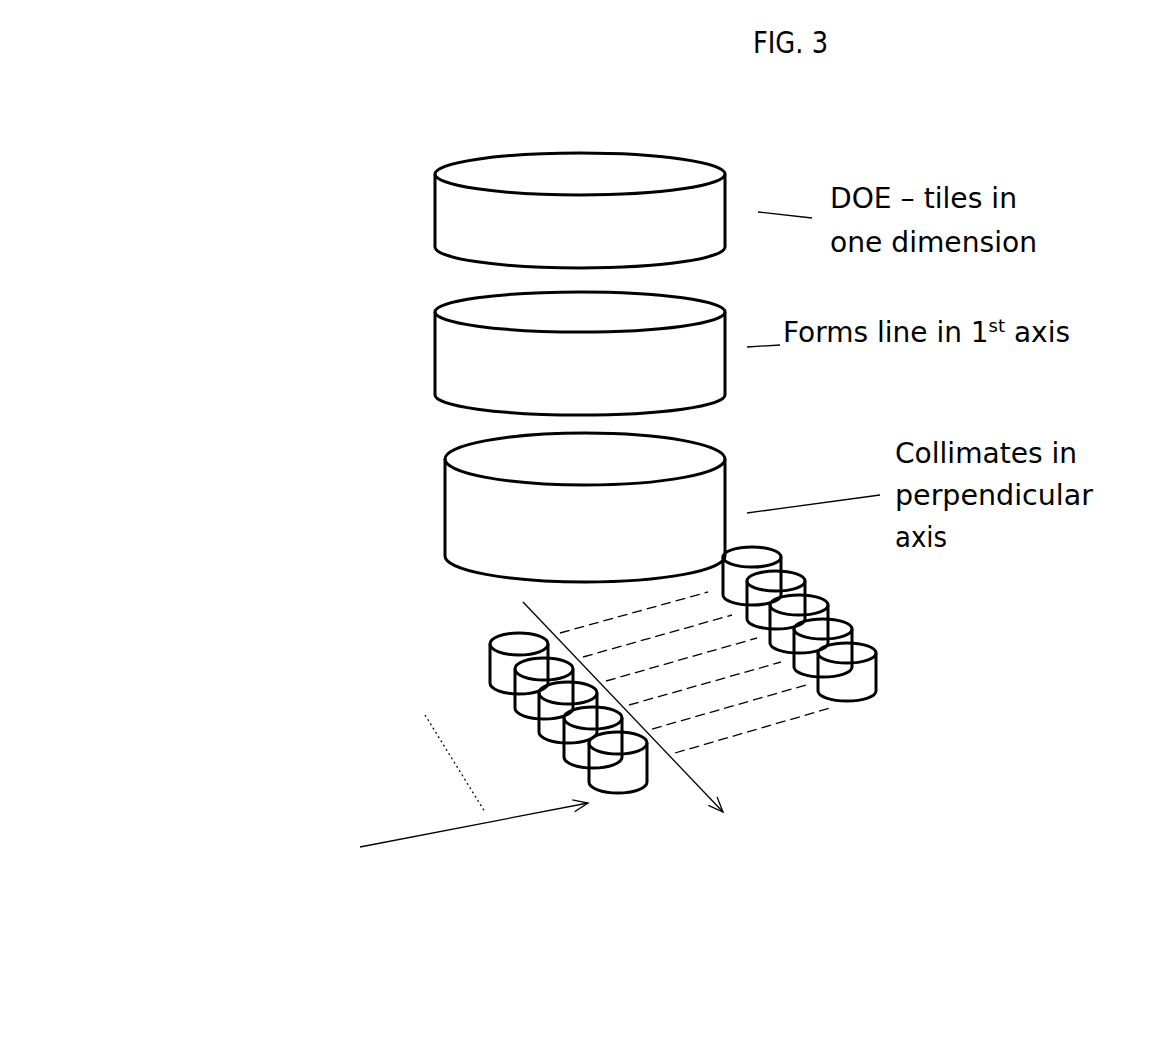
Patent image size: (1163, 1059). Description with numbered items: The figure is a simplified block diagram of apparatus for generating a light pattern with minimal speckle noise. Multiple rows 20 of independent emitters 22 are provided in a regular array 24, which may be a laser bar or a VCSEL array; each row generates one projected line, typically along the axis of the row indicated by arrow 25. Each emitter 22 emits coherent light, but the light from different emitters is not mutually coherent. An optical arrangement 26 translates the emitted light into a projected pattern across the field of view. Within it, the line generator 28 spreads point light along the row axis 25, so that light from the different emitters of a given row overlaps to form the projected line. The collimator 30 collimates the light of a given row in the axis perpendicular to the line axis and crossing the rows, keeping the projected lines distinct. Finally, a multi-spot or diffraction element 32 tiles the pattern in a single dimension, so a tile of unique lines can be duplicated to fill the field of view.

The rows of independent emitters 20 is at (487, 662).
The independent emitter 22 is at (467, 678).
The regular array 24 is at (925, 680).
The row axis arrow 25 is at (702, 779).
The optical arrangement 26 is at (378, 313).
The line generator 28 is at (437, 390).
The collimator 30 is at (446, 535).
The multi-spot or diffraction element 32 is at (462, 150).